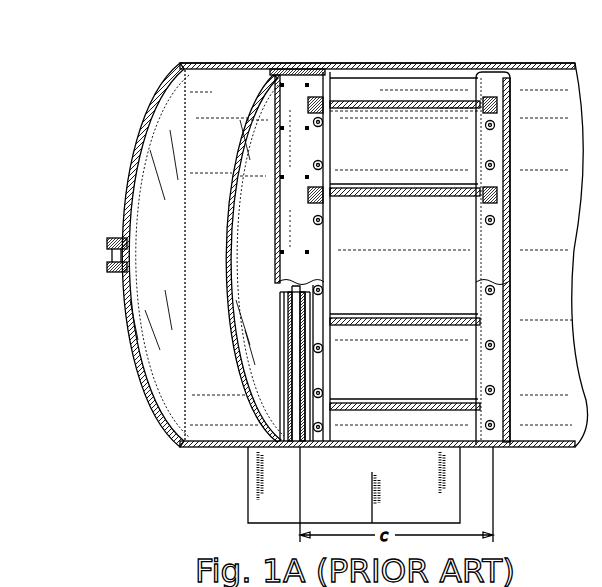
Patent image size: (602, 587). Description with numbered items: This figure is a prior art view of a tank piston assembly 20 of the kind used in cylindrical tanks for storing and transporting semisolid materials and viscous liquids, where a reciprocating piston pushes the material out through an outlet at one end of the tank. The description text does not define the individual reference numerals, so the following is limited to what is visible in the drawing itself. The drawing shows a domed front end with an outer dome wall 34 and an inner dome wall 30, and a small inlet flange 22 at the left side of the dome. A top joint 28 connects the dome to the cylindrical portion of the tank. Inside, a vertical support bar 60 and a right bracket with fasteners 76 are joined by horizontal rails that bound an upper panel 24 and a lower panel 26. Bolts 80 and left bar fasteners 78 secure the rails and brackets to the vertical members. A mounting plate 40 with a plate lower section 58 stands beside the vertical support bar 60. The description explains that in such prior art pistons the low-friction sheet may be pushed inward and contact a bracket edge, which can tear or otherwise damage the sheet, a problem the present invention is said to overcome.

The tank assembly 20 is at (348, 54).
The inlet flange 22 is at (118, 278).
The upper panel 24 is at (466, 357).
The lower panel 26 is at (470, 386).
The top joint 28 is at (272, 77).
The inner dome wall 30 is at (236, 335).
The outer dome wall 34 is at (135, 172).
The mounting plate 40 is at (292, 352).
The plate lower section 58 is at (284, 398).
The vertical support bar 60 is at (314, 338).
The right bracket fasteners 76 is at (478, 70).
The left bar fasteners 78 is at (326, 72).
The bolts 80 is at (323, 122).